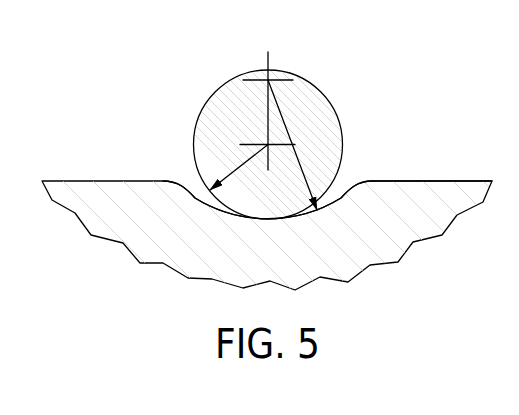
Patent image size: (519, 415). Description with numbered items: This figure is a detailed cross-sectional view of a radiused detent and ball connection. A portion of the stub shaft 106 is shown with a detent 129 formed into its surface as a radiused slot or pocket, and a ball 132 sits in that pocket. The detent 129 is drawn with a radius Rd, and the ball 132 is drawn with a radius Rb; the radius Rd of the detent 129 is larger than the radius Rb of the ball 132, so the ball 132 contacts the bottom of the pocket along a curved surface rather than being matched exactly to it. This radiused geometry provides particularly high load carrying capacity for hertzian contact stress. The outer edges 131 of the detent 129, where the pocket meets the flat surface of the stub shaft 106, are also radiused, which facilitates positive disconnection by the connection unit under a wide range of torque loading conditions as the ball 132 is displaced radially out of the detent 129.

The stub shaft 106 is at (77, 180).
The detent 129 is at (192, 194).
The outer edges 131 is at (365, 180).
The ball 132 is at (249, 73).
The radius of the ball Rb is at (237, 168).
The radius of the detent Rd is at (286, 127).